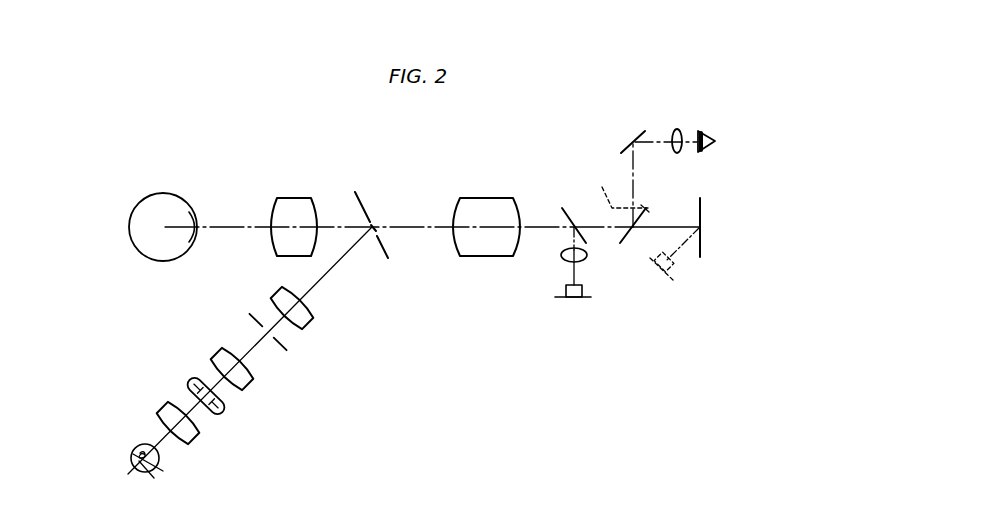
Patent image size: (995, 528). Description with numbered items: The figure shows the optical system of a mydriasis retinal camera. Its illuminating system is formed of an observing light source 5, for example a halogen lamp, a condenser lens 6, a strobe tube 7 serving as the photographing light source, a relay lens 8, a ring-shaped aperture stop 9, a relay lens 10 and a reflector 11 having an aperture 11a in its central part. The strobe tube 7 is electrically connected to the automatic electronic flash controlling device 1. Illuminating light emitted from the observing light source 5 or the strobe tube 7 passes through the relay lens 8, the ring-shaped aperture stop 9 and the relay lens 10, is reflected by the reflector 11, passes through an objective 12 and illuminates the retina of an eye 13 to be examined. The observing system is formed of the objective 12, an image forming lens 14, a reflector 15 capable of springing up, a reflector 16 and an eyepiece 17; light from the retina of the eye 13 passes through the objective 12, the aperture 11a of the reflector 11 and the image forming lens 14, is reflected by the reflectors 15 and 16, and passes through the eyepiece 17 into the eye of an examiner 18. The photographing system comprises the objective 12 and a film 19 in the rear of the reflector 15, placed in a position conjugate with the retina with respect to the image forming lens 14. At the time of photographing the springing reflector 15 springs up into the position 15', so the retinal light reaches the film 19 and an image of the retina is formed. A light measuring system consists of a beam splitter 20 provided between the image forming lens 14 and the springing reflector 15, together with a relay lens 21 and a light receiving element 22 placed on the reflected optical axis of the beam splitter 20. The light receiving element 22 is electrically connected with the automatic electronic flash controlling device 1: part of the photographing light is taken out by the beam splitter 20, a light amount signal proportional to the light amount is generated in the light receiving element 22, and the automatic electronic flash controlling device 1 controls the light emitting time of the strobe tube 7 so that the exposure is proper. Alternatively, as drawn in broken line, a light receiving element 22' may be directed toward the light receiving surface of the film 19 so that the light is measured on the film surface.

The automatic electronic flash controlling device 1 is at (190, 379).
The observing light source 5 is at (140, 476).
The condenser lens 6 is at (195, 443).
The strobe tube 7 is at (213, 415).
The relay lens 8 is at (251, 385).
The ring-shaped aperture stop 9 is at (288, 350).
The relay lens 10 is at (312, 310).
The reflector 11 is at (360, 190).
The aperture 11a is at (377, 222).
The objective 12 is at (293, 197).
The eye to be examined 13 is at (166, 190).
The image forming lens 14 is at (487, 197).
The reflector capable of springing up 15 is at (651, 213).
The position of springing reflector 15' is at (618, 187).
The reflector 16 is at (640, 131).
The eyepiece 17 is at (677, 129).
The observer's eye 18 is at (716, 143).
The film 19 is at (702, 208).
The beam splitter 20 is at (566, 211).
The relay lens 21 is at (561, 257).
The light receiving element 22 is at (555, 307).
The light receiving element 22' is at (694, 257).